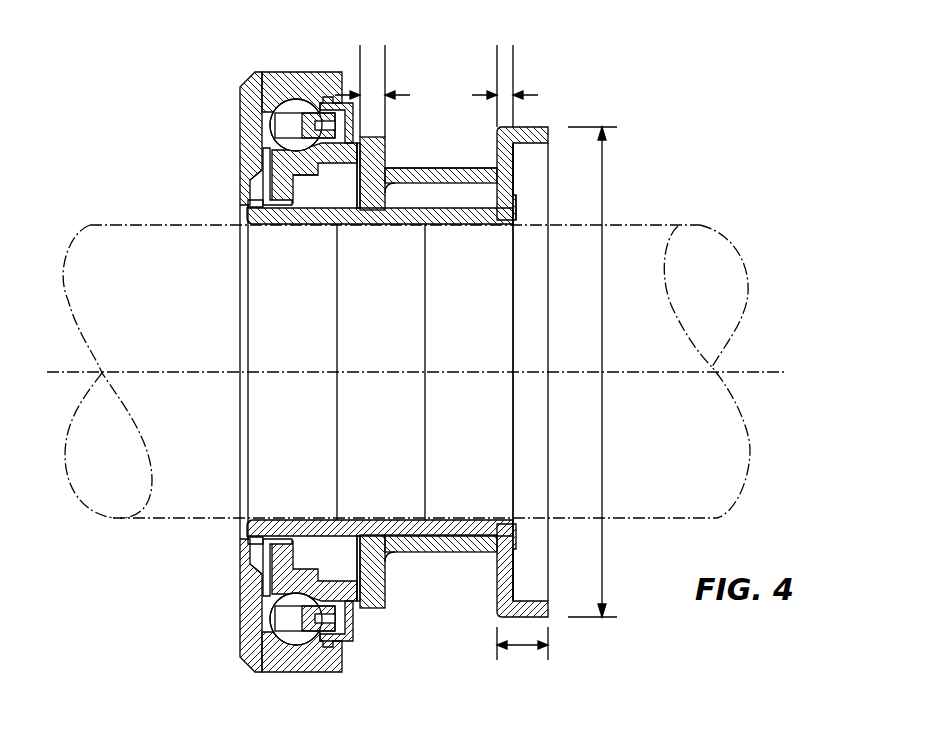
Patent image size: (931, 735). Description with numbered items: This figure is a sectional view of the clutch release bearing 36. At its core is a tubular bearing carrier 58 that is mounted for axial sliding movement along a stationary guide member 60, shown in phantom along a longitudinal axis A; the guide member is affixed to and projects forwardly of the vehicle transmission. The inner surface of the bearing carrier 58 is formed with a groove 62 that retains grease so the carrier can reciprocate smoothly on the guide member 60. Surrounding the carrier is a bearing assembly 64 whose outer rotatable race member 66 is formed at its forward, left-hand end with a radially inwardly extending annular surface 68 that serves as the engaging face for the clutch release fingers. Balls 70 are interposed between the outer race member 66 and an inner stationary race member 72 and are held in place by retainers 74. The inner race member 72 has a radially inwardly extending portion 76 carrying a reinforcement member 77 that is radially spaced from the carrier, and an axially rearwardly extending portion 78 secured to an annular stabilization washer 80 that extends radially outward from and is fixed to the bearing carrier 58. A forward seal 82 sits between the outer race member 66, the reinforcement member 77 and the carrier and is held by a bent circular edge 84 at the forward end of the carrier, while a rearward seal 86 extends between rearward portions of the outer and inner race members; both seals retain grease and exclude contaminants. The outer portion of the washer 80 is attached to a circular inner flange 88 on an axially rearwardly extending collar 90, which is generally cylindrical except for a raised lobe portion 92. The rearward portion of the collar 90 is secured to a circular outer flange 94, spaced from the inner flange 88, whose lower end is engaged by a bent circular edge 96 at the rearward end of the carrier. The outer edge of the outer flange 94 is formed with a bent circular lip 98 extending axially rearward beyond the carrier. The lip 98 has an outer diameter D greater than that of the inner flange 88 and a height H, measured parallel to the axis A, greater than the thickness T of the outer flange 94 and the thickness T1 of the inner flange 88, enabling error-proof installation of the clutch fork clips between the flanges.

The release bearing 36 is at (585, 62).
The tubular bearing carrier 58 is at (470, 226).
The stationary guide member 60 is at (645, 222).
The groove 62 is at (346, 330).
The bearing assembly 64 is at (279, 72).
The outer rotatable race member 66 is at (256, 80).
The annular surface 68 is at (253, 170).
The balls 70 is at (288, 108).
The inner stationary race member 72 is at (262, 150).
The retainers 74 is at (262, 118).
The radially inwardly extending portion 76 is at (298, 206).
The reinforcement member 77 is at (283, 226).
The axially rearwardly extending portion 78 is at (372, 145).
The annular stabilization washer 80 is at (375, 212).
The forward seal 82 is at (264, 162).
The bent circular edge 84 is at (247, 208).
The rearward seal 86 is at (352, 97).
The circular inner flange 88 is at (383, 155).
The collar 90 is at (448, 545).
The raised lobe portion 92 is at (487, 167).
The circular outer flange 94 is at (513, 162).
The bent circular edge 96 is at (513, 216).
The bent circular lip 98 is at (533, 127).
The longitudinal axis A is at (765, 372).
The outer diameter D is at (603, 343).
The height H is at (525, 647).
The thickness T is at (505, 86).
The thickness T1 is at (372, 91).